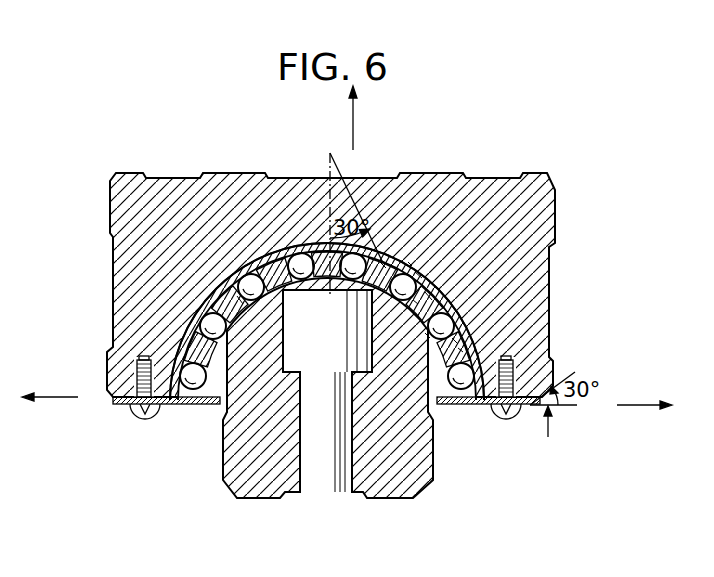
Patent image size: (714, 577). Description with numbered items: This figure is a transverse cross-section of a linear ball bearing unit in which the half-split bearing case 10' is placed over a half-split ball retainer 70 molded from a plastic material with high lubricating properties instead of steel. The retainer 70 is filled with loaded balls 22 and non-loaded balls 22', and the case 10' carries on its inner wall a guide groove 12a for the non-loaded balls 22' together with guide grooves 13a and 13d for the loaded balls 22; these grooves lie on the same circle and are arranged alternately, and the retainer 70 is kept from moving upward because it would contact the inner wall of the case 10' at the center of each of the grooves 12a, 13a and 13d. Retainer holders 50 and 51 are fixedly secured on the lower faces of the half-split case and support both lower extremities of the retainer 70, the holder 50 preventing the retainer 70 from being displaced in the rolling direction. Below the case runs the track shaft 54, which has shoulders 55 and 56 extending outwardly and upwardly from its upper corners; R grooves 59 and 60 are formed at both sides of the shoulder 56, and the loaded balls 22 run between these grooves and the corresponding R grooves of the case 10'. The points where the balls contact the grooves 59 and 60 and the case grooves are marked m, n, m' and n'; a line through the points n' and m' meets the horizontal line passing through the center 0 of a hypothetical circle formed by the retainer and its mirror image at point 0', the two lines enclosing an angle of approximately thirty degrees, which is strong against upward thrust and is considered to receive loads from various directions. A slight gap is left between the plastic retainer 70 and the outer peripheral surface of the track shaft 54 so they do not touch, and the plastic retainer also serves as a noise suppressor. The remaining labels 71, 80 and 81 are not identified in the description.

The half-split bearing case 10' is at (331, 259).
The guide groove for non-loaded balls 12a is at (296, 250).
The guide groove for loaded balls 13a is at (430, 280).
The guide groove for loaded balls 13d is at (218, 300).
The loaded balls 22 is at (337, 270).
The non-loaded balls 22' is at (326, 372).
The retainer holder 50 is at (165, 405).
The retainer holder 51 is at (460, 406).
The track shaft 54 is at (405, 498).
The shoulder 55 is at (238, 297).
The shoulder 56 is at (430, 294).
The R groove 59 is at (373, 325).
The R groove 60 is at (446, 310).
The plastic ball retainer 70 is at (383, 263).
The neck 71 is at (226, 418).
The cage element 80 is at (418, 274).
The cage element 81 is at (455, 340).
The point of contact m is at (418, 242).
The point of contact m' is at (482, 355).
The point of contact n is at (410, 321).
The point of contact n' is at (415, 359).
The center point 0 is at (351, 191).
The point o' 0' is at (561, 404).